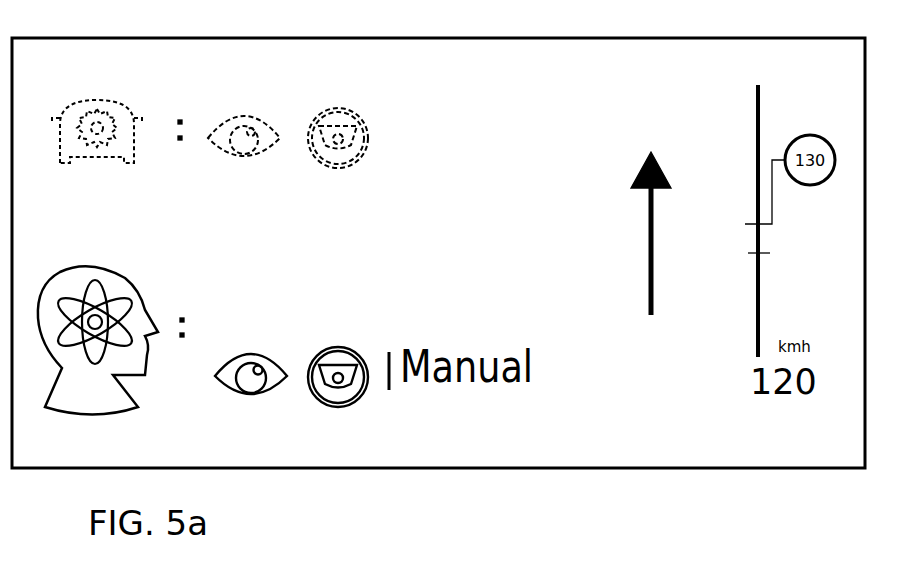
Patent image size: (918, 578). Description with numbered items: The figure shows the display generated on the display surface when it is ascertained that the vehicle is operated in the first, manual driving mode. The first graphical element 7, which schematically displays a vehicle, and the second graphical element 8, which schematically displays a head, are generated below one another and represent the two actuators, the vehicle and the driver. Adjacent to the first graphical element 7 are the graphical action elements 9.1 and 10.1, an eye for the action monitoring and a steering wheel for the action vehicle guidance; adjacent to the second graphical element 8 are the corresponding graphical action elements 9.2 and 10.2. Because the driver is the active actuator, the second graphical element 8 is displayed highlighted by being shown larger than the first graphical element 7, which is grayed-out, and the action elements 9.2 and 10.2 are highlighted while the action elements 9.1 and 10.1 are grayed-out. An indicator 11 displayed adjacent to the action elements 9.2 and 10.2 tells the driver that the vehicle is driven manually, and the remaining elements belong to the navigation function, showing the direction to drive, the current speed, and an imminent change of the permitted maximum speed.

The first graphical element 7 is at (80, 101).
The second graphical element 8 is at (90, 268).
The graphical action element 9.1 is at (238, 115).
The graphical action element 10.1 is at (346, 110).
The graphical action element 9.2 is at (253, 353).
The graphical action element 10.2 is at (342, 348).
The indicator 11 is at (438, 253).